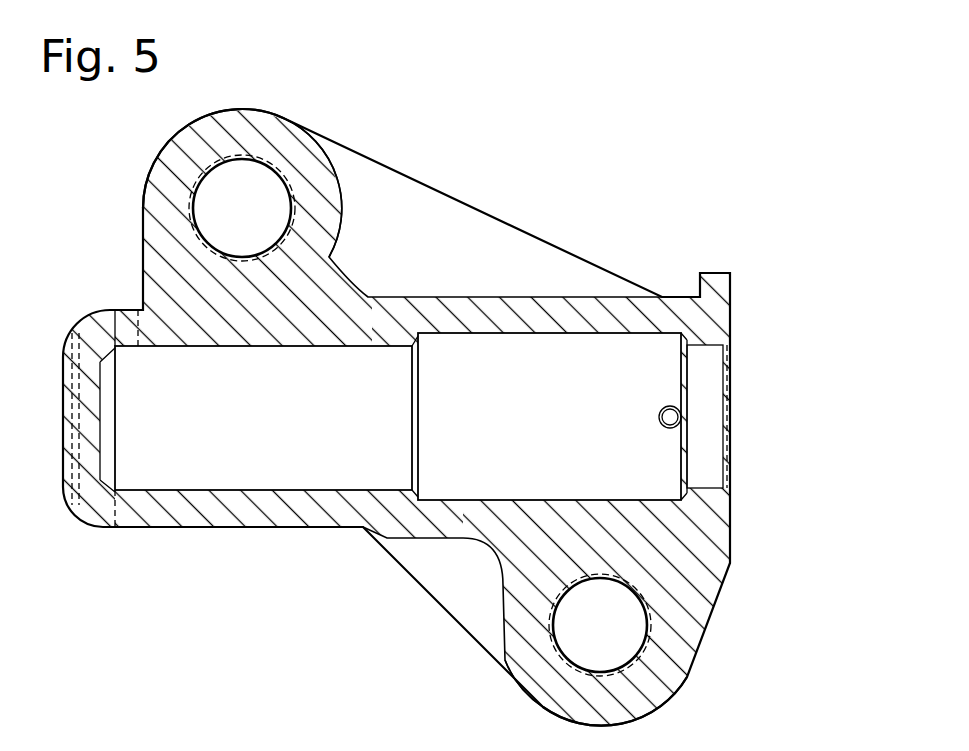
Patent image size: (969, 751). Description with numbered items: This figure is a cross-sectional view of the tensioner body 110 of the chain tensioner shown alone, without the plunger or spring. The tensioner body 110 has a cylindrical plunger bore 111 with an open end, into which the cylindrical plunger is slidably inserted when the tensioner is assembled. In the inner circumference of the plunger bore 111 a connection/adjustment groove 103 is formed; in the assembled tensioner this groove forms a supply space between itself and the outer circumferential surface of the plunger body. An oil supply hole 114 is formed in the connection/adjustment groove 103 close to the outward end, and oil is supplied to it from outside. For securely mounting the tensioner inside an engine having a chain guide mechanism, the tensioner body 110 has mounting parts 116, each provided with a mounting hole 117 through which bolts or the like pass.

The connection/adjustment groove 103 is at (547, 337).
The tensioner body 110 is at (423, 297).
The plunger bore 111 is at (360, 463).
The oil supply hole 114 is at (680, 423).
The mounting part 116 is at (700, 650).
The mounting hole 117 is at (625, 625).